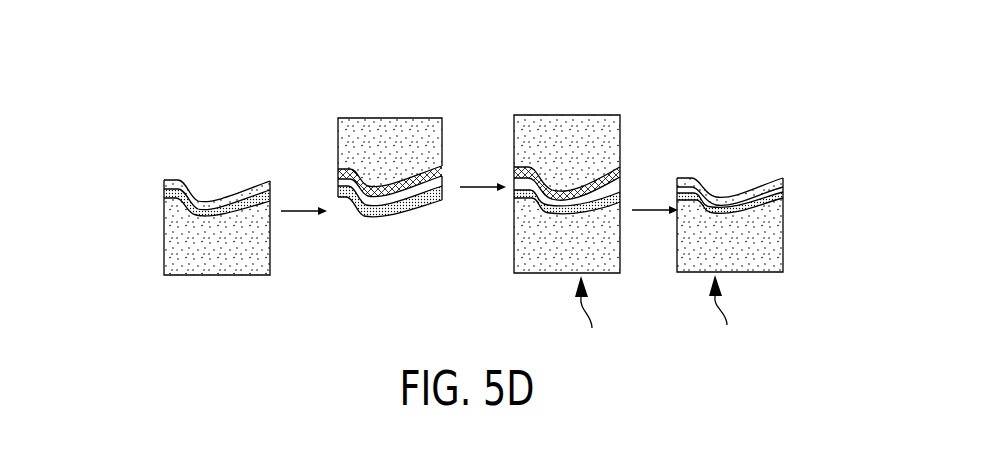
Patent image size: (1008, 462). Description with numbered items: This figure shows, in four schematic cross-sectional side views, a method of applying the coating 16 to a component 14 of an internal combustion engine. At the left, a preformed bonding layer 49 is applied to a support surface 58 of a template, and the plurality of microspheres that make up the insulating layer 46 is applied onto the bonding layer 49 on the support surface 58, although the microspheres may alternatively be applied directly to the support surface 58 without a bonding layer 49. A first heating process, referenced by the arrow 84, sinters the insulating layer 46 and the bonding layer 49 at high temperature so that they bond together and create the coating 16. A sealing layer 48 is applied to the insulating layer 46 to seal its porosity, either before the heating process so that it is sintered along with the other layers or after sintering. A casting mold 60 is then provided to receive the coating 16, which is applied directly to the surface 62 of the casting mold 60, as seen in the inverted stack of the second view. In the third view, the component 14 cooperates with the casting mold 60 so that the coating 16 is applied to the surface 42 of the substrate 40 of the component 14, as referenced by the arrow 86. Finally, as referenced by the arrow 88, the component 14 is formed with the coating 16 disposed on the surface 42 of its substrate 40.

The component 14 is at (657, 314).
The coating 16 is at (787, 176).
The substrate 40 is at (530, 257).
The surface 42 is at (516, 196).
The insulating layer 46 is at (166, 200).
The sealing layer 48 is at (203, 201).
The bonding layer 49 is at (342, 172).
The support surface 58 is at (166, 204).
The casting mold 60 is at (378, 130).
The surface of the casting mold 62 is at (422, 168).
The arrow for first heating process 84 is at (303, 216).
The arrow for coating application 86 is at (480, 184).
The arrow for coated component formation 88 is at (640, 215).